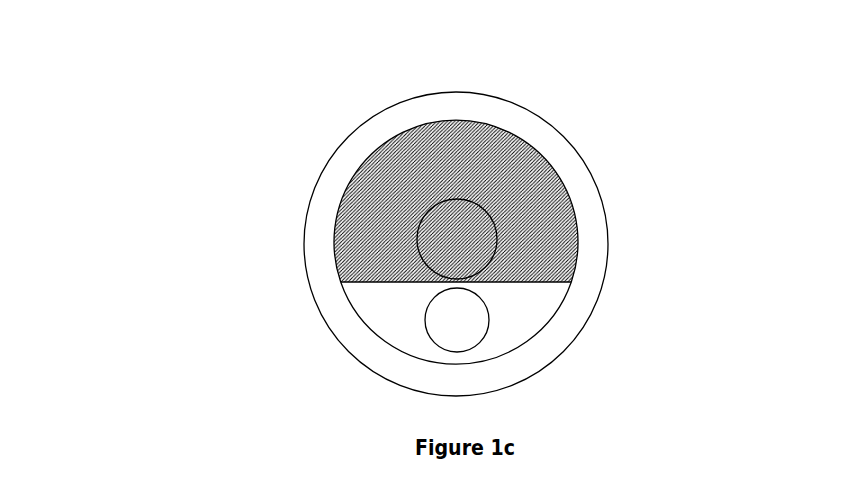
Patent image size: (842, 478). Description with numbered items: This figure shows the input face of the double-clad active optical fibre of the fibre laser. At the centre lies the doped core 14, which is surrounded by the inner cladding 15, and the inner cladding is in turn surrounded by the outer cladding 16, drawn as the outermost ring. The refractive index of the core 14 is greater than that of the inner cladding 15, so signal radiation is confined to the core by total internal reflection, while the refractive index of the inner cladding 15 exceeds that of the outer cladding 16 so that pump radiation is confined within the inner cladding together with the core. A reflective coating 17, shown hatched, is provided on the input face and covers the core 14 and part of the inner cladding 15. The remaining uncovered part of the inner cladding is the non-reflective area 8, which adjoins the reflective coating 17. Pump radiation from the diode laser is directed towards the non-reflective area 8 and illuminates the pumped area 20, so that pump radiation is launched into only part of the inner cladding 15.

The non-reflective area 8 is at (520, 317).
The doped core 14 is at (452, 220).
The inner cladding 15 is at (488, 147).
The outer cladding 16 is at (570, 170).
The reflective coating 17 is at (368, 222).
The pumped area 20 is at (447, 317).